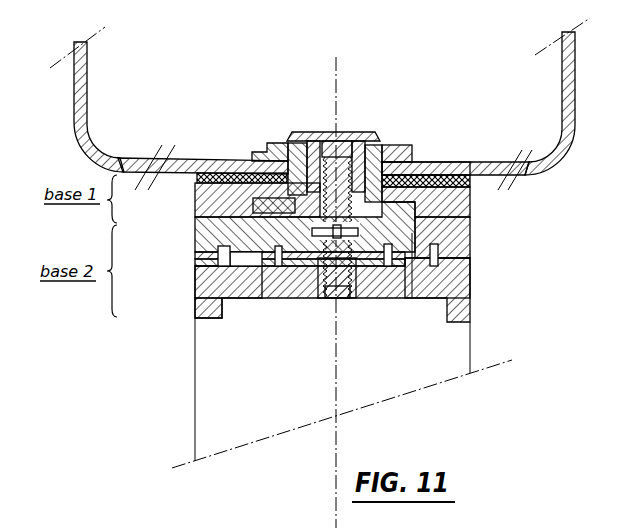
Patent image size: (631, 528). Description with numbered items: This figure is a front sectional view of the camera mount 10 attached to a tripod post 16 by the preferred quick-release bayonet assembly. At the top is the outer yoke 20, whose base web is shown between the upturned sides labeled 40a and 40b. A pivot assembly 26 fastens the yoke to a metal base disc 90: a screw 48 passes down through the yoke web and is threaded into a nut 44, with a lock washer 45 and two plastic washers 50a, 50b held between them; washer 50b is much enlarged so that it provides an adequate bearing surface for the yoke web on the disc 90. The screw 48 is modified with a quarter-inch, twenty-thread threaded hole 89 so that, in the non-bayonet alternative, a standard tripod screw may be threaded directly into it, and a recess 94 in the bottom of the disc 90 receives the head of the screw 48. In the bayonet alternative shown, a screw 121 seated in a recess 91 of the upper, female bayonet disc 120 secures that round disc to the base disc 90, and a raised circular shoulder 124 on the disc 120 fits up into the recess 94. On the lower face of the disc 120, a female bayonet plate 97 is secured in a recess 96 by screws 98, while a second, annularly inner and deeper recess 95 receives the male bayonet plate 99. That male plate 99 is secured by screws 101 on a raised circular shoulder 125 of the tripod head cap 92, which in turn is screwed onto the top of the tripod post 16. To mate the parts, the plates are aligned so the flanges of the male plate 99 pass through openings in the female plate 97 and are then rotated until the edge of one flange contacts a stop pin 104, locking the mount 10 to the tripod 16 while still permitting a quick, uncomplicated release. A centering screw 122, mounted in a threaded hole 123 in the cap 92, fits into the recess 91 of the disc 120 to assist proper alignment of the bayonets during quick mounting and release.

The mold apparatus 10 is at (324, 93).
The left side wall 40a is at (84, 113).
The right side wall 40b is at (562, 65).
The outer yoke 20 is at (194, 156).
The screw 48 is at (287, 203).
The recess 94 is at (253, 211).
The male bayonet plate 99 is at (255, 234).
The second recess 95 is at (235, 255).
The recess 96 is at (200, 273).
The screws 98 is at (198, 312).
The female bayonet plate 97 is at (198, 322).
The screws 101 is at (222, 318).
The tripod head cap 92 is at (462, 292).
The female bayonet disc 120 is at (468, 250).
The raised circular shoulder 124 is at (445, 238).
The metal disc 90 is at (470, 212).
The plastic washer 50b is at (472, 182).
The plastic washer 50a is at (425, 163).
The lock washer 45 is at (410, 147).
The threaded hole 89 is at (378, 145).
The nut 44 is at (364, 141).
The pivot assembly 26 is at (345, 141).
The screw 121 is at (339, 157).
The raised circular shoulder 125 is at (345, 298).
The recess 91 is at (334, 298).
The centering screw 122 is at (318, 298).
The threaded hole 123 is at (330, 268).
The stop pin 104 is at (412, 298).
The tripod post 16 is at (414, 390).